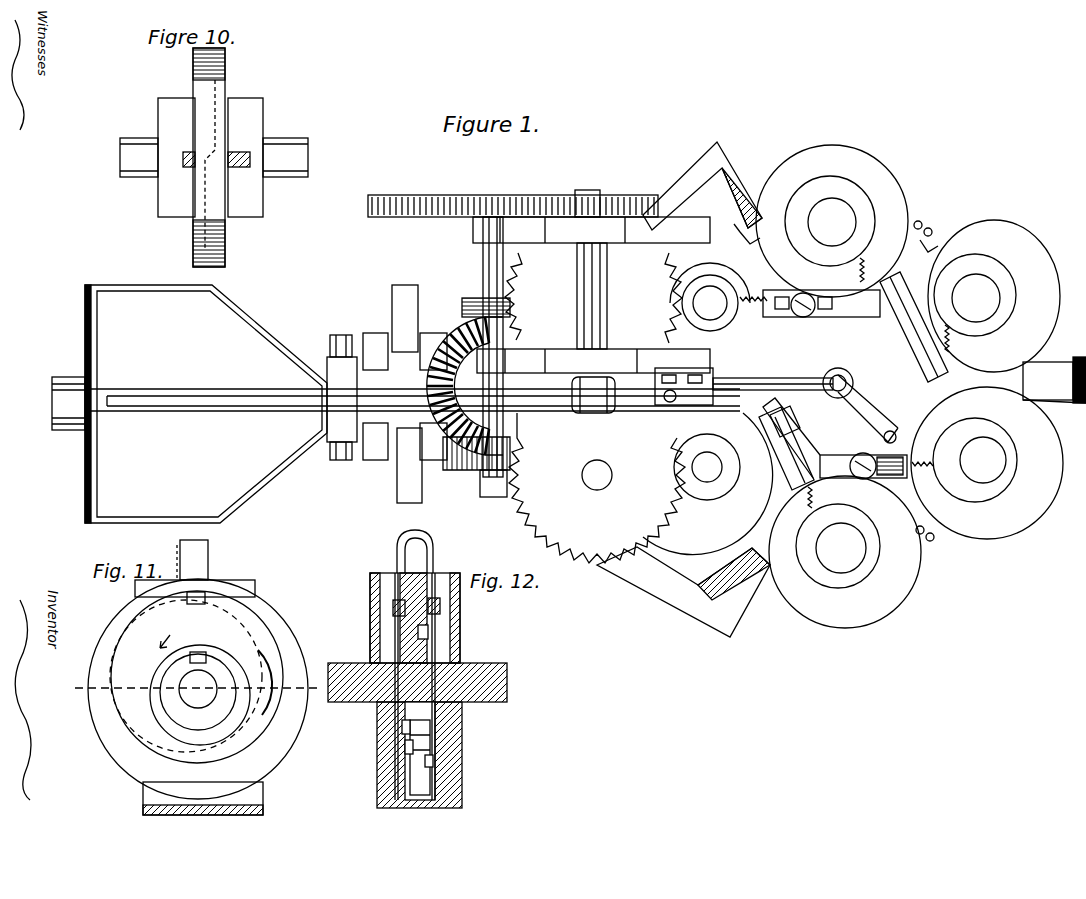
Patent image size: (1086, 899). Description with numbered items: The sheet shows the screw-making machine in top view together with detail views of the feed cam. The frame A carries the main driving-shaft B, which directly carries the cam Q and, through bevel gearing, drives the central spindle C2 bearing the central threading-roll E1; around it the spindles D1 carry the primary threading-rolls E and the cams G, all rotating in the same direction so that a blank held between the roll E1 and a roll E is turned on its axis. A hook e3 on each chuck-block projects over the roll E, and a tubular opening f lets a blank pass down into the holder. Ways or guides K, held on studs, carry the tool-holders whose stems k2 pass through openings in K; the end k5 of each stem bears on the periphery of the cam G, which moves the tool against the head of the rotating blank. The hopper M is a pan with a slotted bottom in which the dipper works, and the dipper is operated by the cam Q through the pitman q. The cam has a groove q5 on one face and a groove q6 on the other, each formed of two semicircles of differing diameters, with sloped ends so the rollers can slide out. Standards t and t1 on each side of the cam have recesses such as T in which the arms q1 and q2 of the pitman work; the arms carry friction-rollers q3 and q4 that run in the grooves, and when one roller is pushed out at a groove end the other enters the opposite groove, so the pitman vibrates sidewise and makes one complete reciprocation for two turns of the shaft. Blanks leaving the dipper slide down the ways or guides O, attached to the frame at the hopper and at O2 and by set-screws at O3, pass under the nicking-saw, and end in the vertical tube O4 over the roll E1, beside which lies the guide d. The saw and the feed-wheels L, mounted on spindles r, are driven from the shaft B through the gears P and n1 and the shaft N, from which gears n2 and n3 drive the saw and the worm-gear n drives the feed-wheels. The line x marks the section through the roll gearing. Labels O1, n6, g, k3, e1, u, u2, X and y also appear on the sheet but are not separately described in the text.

In FIG. 1, the frame A is at (706, 389).
In FIG. 10, the main driving-shaft B is at (200, 157).
In FIG. 11, the main driving-shaft B is at (197, 689).
In FIG. 12, the main driving-shaft B is at (413, 682).
In FIG. 1, the main driving-shaft B is at (56, 403).
In FIG. 1, the hopper M is at (206, 404).
In FIG. 1, the ways or guides O is at (412, 392).
In FIG. 1, the shaft extension O1 is at (773, 375).
In FIG. 1, the guide attachment point O2 is at (684, 377).
In FIG. 1, the set-screw attachment O3 is at (699, 357).
In FIG. 1, the vertical tube O4 is at (810, 407).
In FIG. 1, the section line x is at (555, 404).
In FIG. 10, the standard t is at (176, 157).
In FIG. 11, the standard t is at (199, 697).
In FIG. 12, the standard t is at (416, 690).
In FIG. 1, the standard t is at (375, 396).
In FIG. 10, the standard t1 is at (245, 157).
In FIG. 12, the standard t1 is at (452, 662).
In FIG. 1, the standard t1 is at (433, 396).
In FIG. 10, the cam Q is at (209, 157).
In FIG. 11, the cam Q is at (198, 689).
In FIG. 12, the cam Q is at (415, 684).
In FIG. 1, the cam Q is at (407, 394).
In FIG. 1, the gear P is at (465, 386).
In FIG. 1, the shaft N is at (493, 347).
In FIG. 1, the worm-gear n is at (478, 307).
In FIG. 1, the gear n1 is at (469, 467).
In FIG. 1, the gear n2 is at (513, 196).
In FIG. 1, the gear n3 is at (555, 183).
In FIG. 1, the shaft n6 is at (597, 296).
In FIG. 1, the feed-wheels L is at (595, 408).
In FIG. 10, the recess T is at (211, 152).
In FIG. 1, the recess T is at (597, 475).
In FIG. 1, the central spindle C2 is at (838, 371).
In FIG. 1, the guide d is at (868, 409).
In FIG. 1, the primary threading-rolls E is at (853, 386).
In FIG. 1, the central threading-roll E1 is at (878, 373).
In FIG. 1, the cams G is at (845, 382).
In FIG. 1, the spindles D1 is at (849, 385).
In FIG. 1, the hook g is at (857, 387).
In FIG. 1, the ways or guides K is at (852, 381).
In FIG. 1, the stem k2 is at (950, 343).
In FIG. 1, the spring seat k3 is at (933, 385).
In FIG. 1, the stem end k5 is at (963, 334).
In FIG. 1, the hook e3 is at (837, 241).
In FIG. 1, the arm e1 is at (980, 391).
In FIG. 1, the tubular opening f is at (929, 381).
In FIG. 11, the pitman q is at (188, 560).
In FIG. 10, the arm q1 is at (183, 160).
In FIG. 12, the arm q1 is at (400, 538).
In FIG. 12, the arm q2 is at (430, 538).
In FIG. 12, the friction-roller q3 is at (393, 608).
In FIG. 10, the friction-roller q4 is at (256, 156).
In FIG. 12, the friction-roller q4 is at (440, 608).
In FIG. 10, the groove q5 is at (217, 93).
In FIG. 11, the groove q5 is at (262, 706).
In FIG. 12, the groove q5 is at (475, 636).
In FIG. 10, the groove q6 is at (200, 218).
In FIG. 12, the groove q6 is at (402, 730).
In FIG. 12, the spindles r is at (413, 686).
In FIG. 11, the lug u is at (200, 668).
In FIG. 11, the lug u2 is at (204, 750).
In FIG. 11, the axis X is at (188, 791).
In FIG. 11, the axis y is at (189, 688).